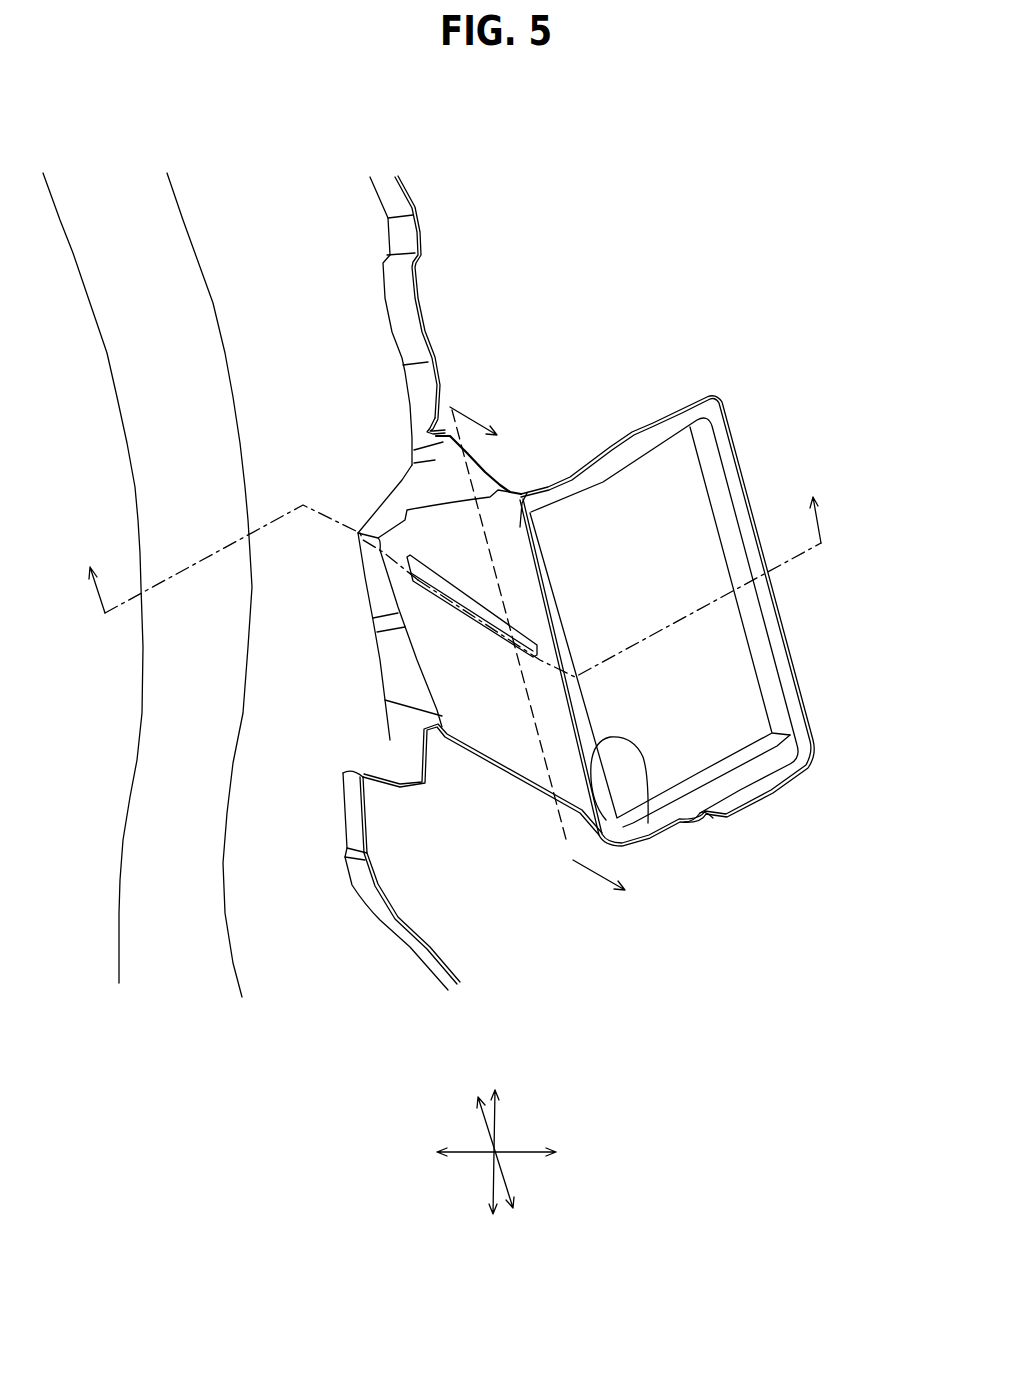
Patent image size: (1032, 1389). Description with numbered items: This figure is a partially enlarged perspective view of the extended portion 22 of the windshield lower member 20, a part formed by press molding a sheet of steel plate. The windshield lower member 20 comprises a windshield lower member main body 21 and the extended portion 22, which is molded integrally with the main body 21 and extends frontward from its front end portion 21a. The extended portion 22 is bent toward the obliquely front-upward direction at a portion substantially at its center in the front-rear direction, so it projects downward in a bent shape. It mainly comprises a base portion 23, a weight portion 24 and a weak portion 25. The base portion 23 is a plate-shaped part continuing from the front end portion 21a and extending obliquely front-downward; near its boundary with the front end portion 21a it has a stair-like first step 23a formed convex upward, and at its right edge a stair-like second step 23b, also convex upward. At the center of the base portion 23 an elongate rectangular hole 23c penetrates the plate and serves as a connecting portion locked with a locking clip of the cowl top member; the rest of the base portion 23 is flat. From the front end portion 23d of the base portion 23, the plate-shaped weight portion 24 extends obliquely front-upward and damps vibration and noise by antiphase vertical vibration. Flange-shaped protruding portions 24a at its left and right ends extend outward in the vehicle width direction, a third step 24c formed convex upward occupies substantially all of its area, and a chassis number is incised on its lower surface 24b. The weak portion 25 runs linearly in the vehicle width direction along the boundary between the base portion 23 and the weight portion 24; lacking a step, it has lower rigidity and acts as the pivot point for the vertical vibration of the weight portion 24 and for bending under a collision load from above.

The windshield lower member 20 is at (605, 139).
The windshield lower member main body 21 is at (325, 257).
The front end portion 21a is at (403, 462).
The extended portion 22 is at (740, 428).
The base portion 23 is at (468, 700).
The first step 23a is at (403, 673).
The second step 23b is at (517, 773).
The hole 23c is at (453, 603).
The front end portion of the base portion 23d is at (517, 527).
The weight portion 24 is at (757, 805).
The protruding portion 24a is at (653, 430).
The lower surface 24b is at (714, 820).
The third step 24c is at (720, 667).
The weak portion 25 is at (648, 823).